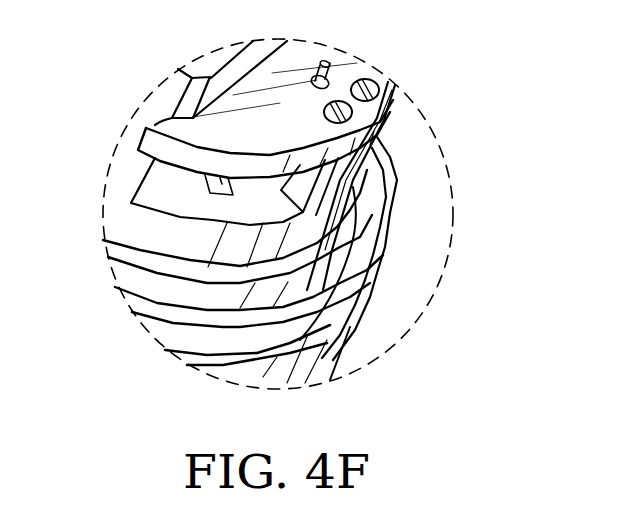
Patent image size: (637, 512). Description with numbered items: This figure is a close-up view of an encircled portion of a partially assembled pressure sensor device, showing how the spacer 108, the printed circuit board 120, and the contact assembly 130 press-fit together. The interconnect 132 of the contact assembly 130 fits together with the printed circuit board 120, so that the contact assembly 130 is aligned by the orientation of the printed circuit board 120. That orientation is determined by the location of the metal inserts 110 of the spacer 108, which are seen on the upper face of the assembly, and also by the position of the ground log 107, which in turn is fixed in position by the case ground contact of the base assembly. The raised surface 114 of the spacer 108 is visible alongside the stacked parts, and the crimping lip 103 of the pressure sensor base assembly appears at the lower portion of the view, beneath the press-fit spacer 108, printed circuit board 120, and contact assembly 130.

The crimping lip 103 is at (330, 290).
The ground log 107 is at (330, 50).
The spacer 108 is at (322, 252).
The metal inserts 110 is at (338, 118).
The raised surface 114 is at (373, 163).
The printed circuit board 120 is at (385, 133).
The contact assembly 130 is at (172, 91).
The interconnect 132 is at (127, 135).